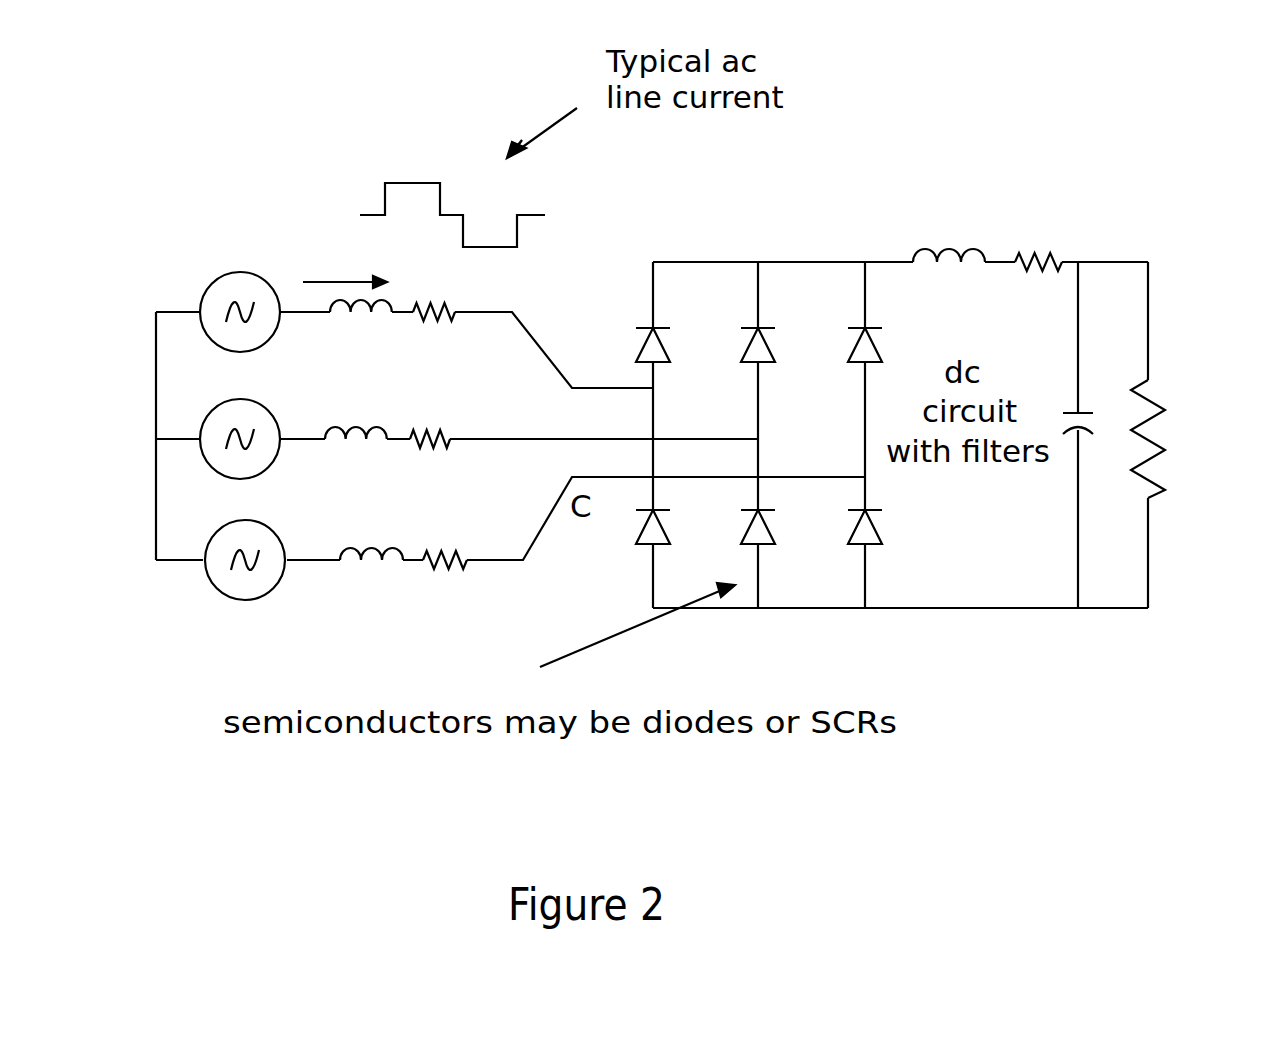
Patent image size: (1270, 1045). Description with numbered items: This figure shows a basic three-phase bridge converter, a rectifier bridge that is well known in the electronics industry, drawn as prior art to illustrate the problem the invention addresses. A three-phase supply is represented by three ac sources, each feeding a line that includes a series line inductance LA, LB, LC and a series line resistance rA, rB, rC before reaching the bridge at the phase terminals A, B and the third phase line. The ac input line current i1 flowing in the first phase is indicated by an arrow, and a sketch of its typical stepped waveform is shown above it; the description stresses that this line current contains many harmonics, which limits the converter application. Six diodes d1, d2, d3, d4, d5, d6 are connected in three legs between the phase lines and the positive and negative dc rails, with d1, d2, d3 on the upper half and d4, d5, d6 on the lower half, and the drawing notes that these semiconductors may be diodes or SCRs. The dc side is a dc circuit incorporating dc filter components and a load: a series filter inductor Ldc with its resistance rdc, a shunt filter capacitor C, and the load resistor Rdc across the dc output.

The phase A line A is at (466, 350).
The phase B line B is at (519, 421).
The ac line current i1 is at (345, 268).
The phase A line inductance LA is at (361, 332).
The phase B line inductance LB is at (356, 458).
The phase C line inductance LC is at (371, 578).
The phase A line resistance rA is at (434, 333).
The phase B line resistance rB is at (430, 460).
The phase C line resistance rC is at (445, 580).
The semiconductor diode/SCR d1 is at (669, 325).
The semiconductor diode/SCR d2 is at (774, 325).
The semiconductor diode/SCR d3 is at (881, 324).
The semiconductor diode/SCR d4 is at (675, 542).
The semiconductor diode/SCR d5 is at (781, 542).
The semiconductor diode/SCR d6 is at (889, 542).
The dc filter inductor Ldc is at (964, 223).
The dc filter inductor resistance rdc is at (1040, 227).
The dc filter capacitor C is at (1089, 435).
The dc load resistor Rdc is at (1186, 439).